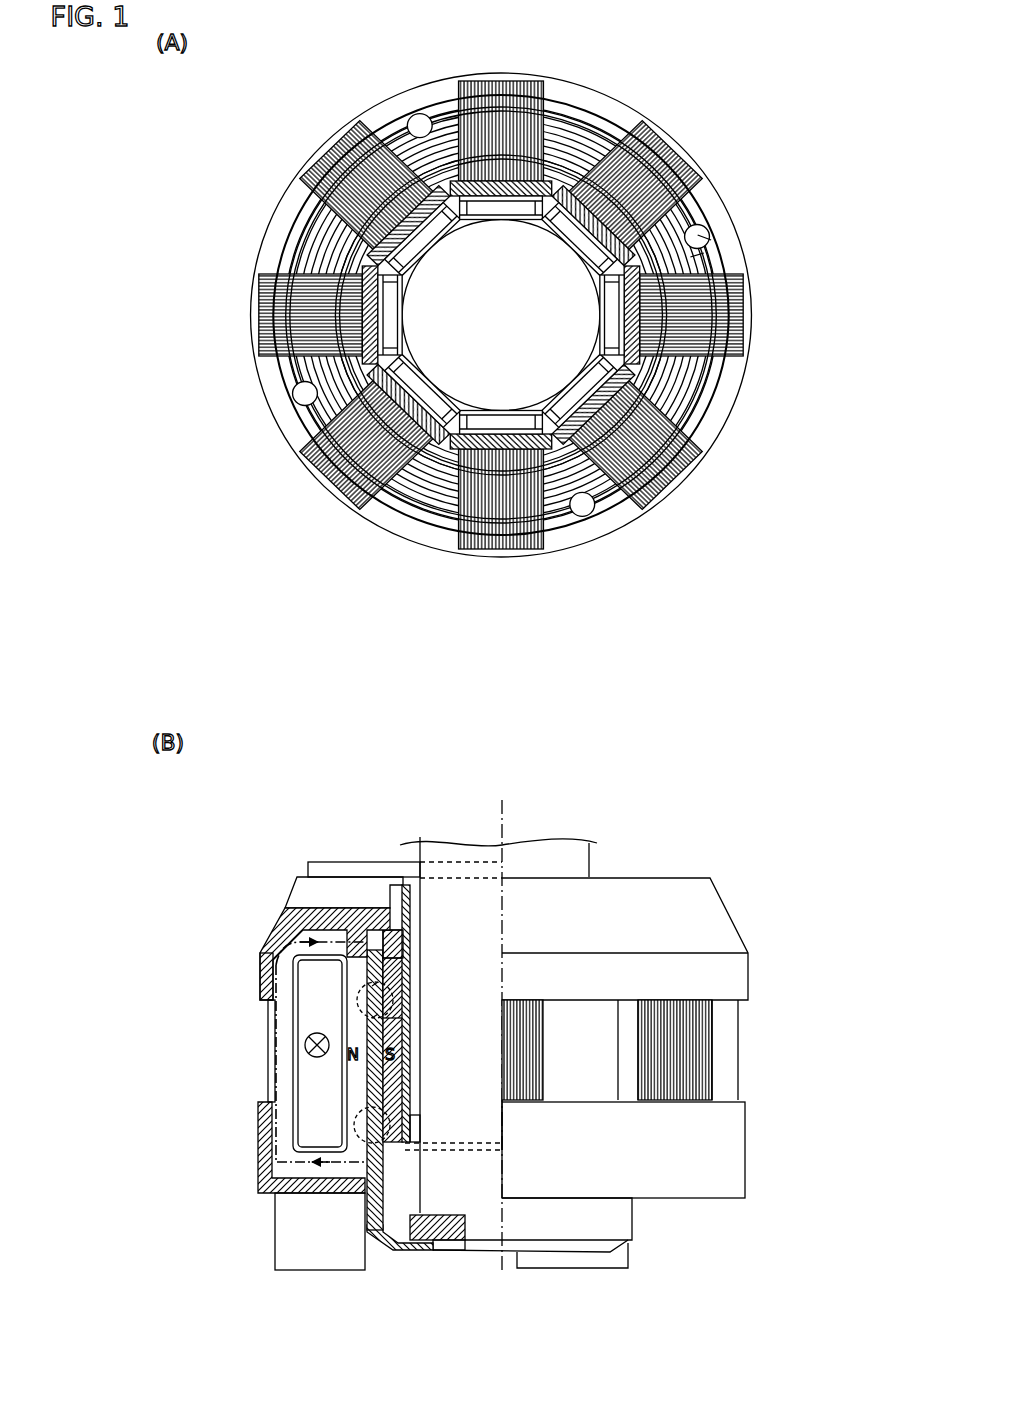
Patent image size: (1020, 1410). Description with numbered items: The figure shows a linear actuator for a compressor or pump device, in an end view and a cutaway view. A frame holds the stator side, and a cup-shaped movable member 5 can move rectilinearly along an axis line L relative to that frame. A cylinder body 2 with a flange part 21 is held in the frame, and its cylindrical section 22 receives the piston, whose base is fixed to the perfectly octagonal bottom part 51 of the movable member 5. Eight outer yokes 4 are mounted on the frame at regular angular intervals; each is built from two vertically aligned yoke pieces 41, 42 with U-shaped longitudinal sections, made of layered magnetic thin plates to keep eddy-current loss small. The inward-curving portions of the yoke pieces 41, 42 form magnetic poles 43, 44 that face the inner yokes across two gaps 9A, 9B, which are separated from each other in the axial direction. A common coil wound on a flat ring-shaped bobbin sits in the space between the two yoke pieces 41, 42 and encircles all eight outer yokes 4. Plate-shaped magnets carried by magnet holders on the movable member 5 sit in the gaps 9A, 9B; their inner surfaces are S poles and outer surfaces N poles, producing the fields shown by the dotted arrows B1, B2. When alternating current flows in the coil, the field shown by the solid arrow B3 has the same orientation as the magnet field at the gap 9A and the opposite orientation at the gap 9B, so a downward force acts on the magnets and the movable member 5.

The cylinder body 2 is at (377, 856).
The outer yoke 4 is at (251, 1062).
The movable member 5 is at (405, 1252).
The gap 9A is at (390, 955).
The gap 9B is at (413, 1128).
The flange part 21 is at (347, 864).
The cylindrical section 22 is at (415, 925).
The yoke piece 41 is at (275, 972).
The yoke piece 42 is at (270, 1052).
The magnetic pole 43 is at (337, 908).
The magnetic pole 44 is at (357, 1165).
The bottom part 51 is at (448, 1241).
The magnetic field B1 is at (360, 1000).
The magnetic field B2 is at (355, 1118).
The magnetic field B3 is at (272, 945).
The axis line L is at (504, 842).